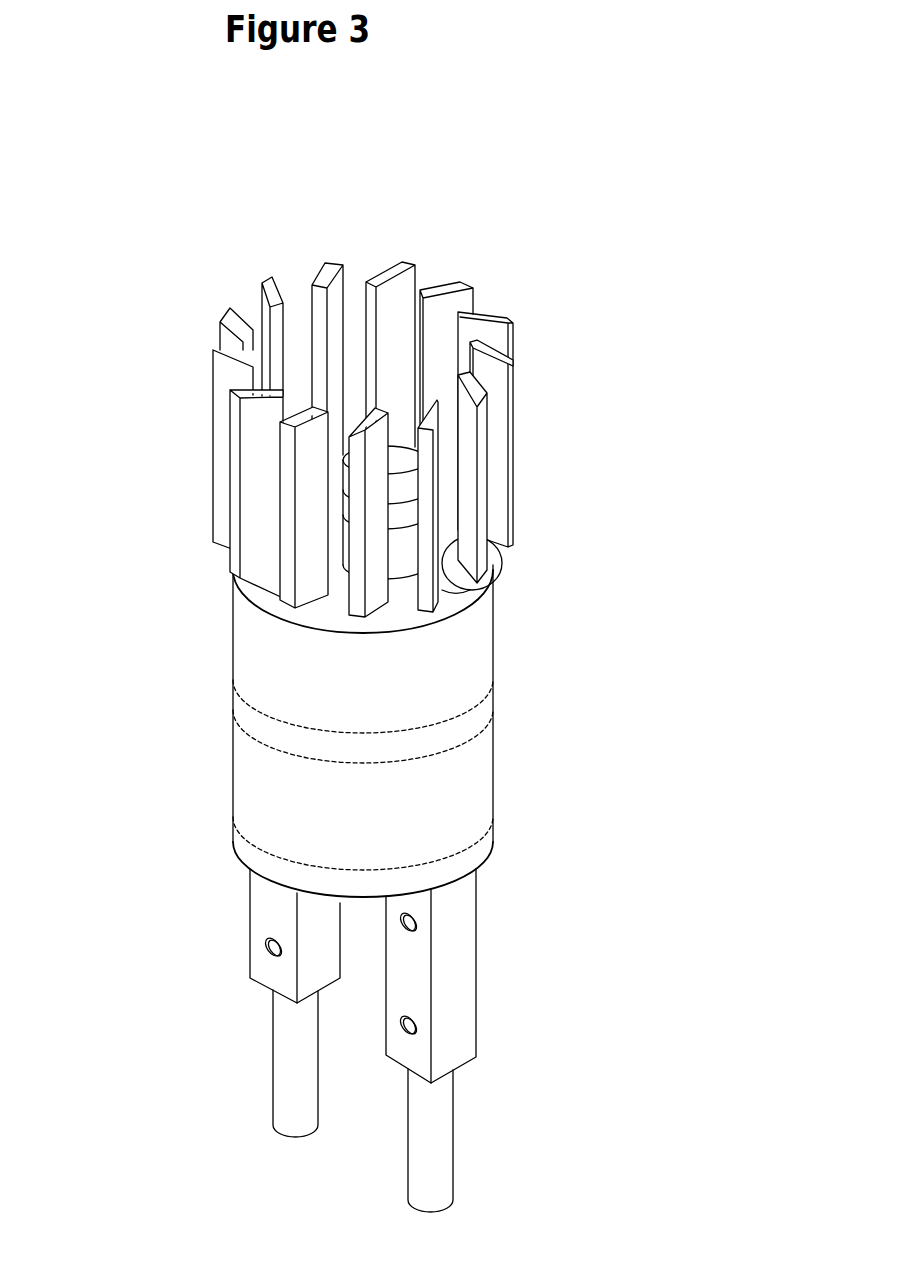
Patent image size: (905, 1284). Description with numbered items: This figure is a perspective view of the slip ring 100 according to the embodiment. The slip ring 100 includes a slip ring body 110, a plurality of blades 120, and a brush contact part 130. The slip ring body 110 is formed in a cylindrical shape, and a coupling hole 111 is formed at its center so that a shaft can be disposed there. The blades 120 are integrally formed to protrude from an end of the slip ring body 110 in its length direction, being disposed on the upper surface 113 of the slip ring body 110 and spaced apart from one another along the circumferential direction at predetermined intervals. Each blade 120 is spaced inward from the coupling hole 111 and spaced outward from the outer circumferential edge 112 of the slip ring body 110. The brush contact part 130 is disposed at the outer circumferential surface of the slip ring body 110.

The slip ring 100 is at (121, 147).
The slip ring body 110 is at (254, 848).
The coupling hole 111 is at (392, 543).
The outer circumferential edge 112 is at (453, 590).
The upper surface 113 is at (452, 548).
The blades 120 is at (490, 307).
The brush contact part 130 is at (253, 750).